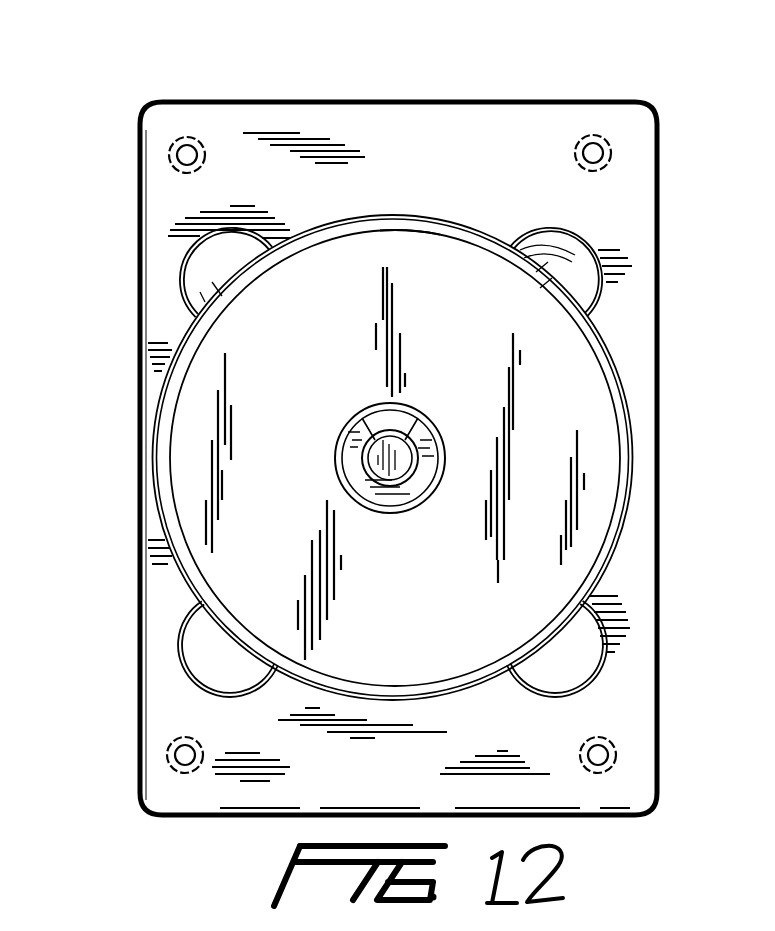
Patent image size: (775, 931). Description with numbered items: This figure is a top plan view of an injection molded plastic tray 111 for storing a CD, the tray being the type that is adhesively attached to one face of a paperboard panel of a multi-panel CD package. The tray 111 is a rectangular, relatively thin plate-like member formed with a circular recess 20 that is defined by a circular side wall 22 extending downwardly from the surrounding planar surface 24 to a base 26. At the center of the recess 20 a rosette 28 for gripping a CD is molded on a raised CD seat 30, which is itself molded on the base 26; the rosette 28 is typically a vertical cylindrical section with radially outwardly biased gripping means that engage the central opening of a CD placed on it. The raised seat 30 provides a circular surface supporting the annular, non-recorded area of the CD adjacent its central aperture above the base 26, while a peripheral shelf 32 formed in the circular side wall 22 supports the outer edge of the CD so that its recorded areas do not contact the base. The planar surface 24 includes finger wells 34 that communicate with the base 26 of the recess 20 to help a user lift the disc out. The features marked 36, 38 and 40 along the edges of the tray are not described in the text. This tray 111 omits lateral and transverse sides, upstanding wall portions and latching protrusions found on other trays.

The injection molded plastic tray 111 is at (672, 142).
The circular recess 20 is at (230, 563).
The circular side wall 22 is at (380, 215).
The planar surface 24 is at (537, 192).
The base 26 is at (298, 395).
The rosette 28 is at (407, 495).
The raised CD seat 30 is at (432, 422).
The peripheral shelf 32 is at (413, 232).
The finger wells 34 is at (195, 268).
The bottom edge of plate 36 is at (190, 816).
The top edge of plate 38 is at (420, 101).
The side edge of plate 40 is at (660, 605).